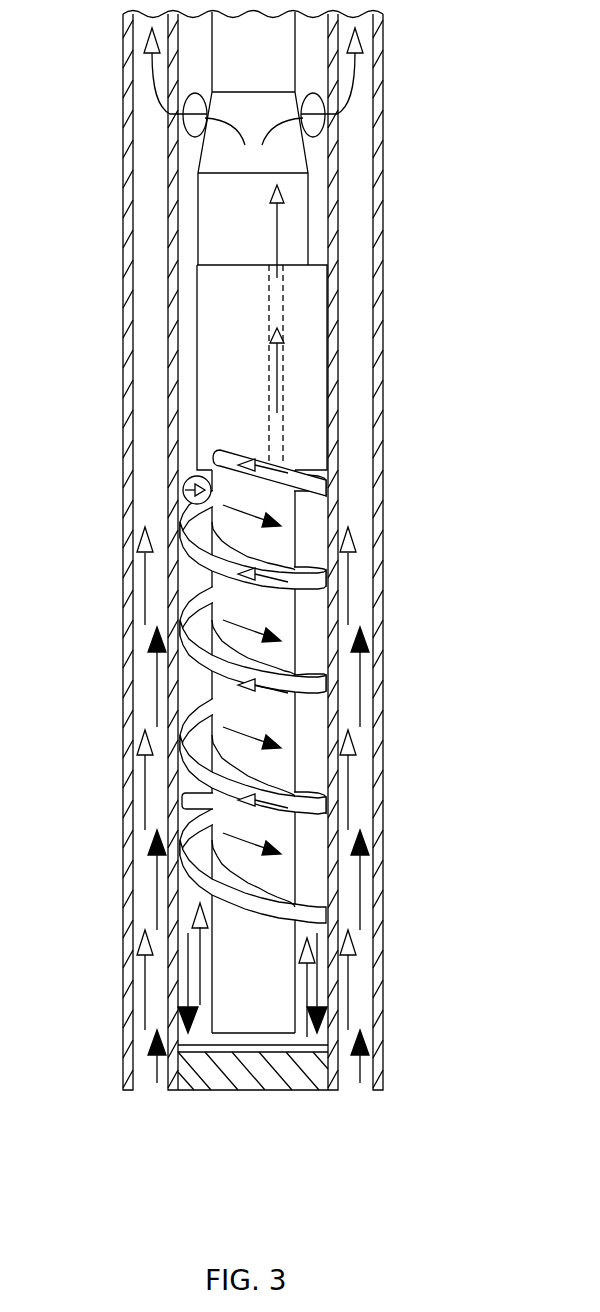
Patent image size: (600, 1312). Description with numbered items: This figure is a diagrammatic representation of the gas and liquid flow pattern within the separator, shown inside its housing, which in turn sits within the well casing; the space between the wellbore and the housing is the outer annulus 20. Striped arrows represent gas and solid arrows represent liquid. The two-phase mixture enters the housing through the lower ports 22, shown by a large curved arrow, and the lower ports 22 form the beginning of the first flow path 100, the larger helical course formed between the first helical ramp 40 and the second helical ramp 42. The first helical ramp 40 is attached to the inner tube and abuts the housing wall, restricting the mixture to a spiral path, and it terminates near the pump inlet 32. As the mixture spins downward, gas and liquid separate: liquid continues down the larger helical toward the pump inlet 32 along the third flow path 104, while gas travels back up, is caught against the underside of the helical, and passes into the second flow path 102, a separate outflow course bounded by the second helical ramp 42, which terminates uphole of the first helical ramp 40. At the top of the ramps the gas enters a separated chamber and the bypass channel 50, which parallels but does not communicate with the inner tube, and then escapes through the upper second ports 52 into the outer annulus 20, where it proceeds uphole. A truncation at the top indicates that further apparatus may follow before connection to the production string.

The outer annulus 20 is at (350, 281).
The lower ports 22 is at (186, 480).
The pump inlet 32 is at (253, 1033).
The first helical ramp 40 is at (323, 803).
The second helical ramp 42 is at (195, 685).
The bypass channel 50 is at (280, 298).
The second ports 52 is at (316, 135).
The first flow path 100 is at (222, 612).
The second flow path 102 is at (283, 462).
The third flow path 104 is at (317, 975).